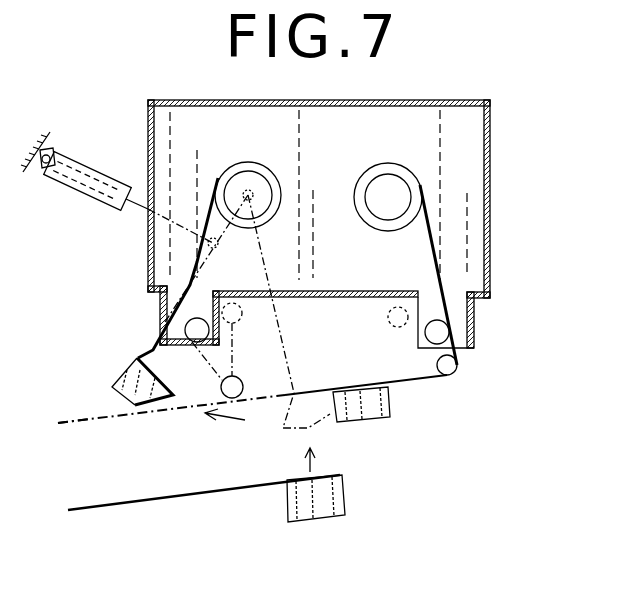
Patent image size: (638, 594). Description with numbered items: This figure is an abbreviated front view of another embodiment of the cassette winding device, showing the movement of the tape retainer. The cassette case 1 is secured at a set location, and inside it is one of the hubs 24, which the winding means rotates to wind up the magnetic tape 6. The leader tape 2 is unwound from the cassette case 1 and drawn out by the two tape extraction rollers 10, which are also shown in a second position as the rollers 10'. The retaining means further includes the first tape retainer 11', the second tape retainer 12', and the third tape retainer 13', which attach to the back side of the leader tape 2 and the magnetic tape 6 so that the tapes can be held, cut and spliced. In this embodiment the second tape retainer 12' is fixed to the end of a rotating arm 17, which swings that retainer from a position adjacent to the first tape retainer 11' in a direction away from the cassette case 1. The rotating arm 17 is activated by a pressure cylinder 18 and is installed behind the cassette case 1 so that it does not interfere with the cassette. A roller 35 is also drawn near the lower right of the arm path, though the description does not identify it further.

The cassette case 1 is at (490, 150).
The leader tape 2 is at (193, 283).
The hub 24 is at (398, 172).
The pressure cylinder 18 is at (95, 198).
The rotating arm 17 is at (155, 340).
The tape extraction rollers 10 is at (253, 359).
The tape extraction rollers 10' is at (430, 352).
The tension roller 35 is at (450, 334).
The second tape retainer 12' is at (225, 401).
The first tape retainer 11' is at (374, 420).
The third tape retainer 13' is at (324, 517).
The magnetic tape 6 is at (88, 425).